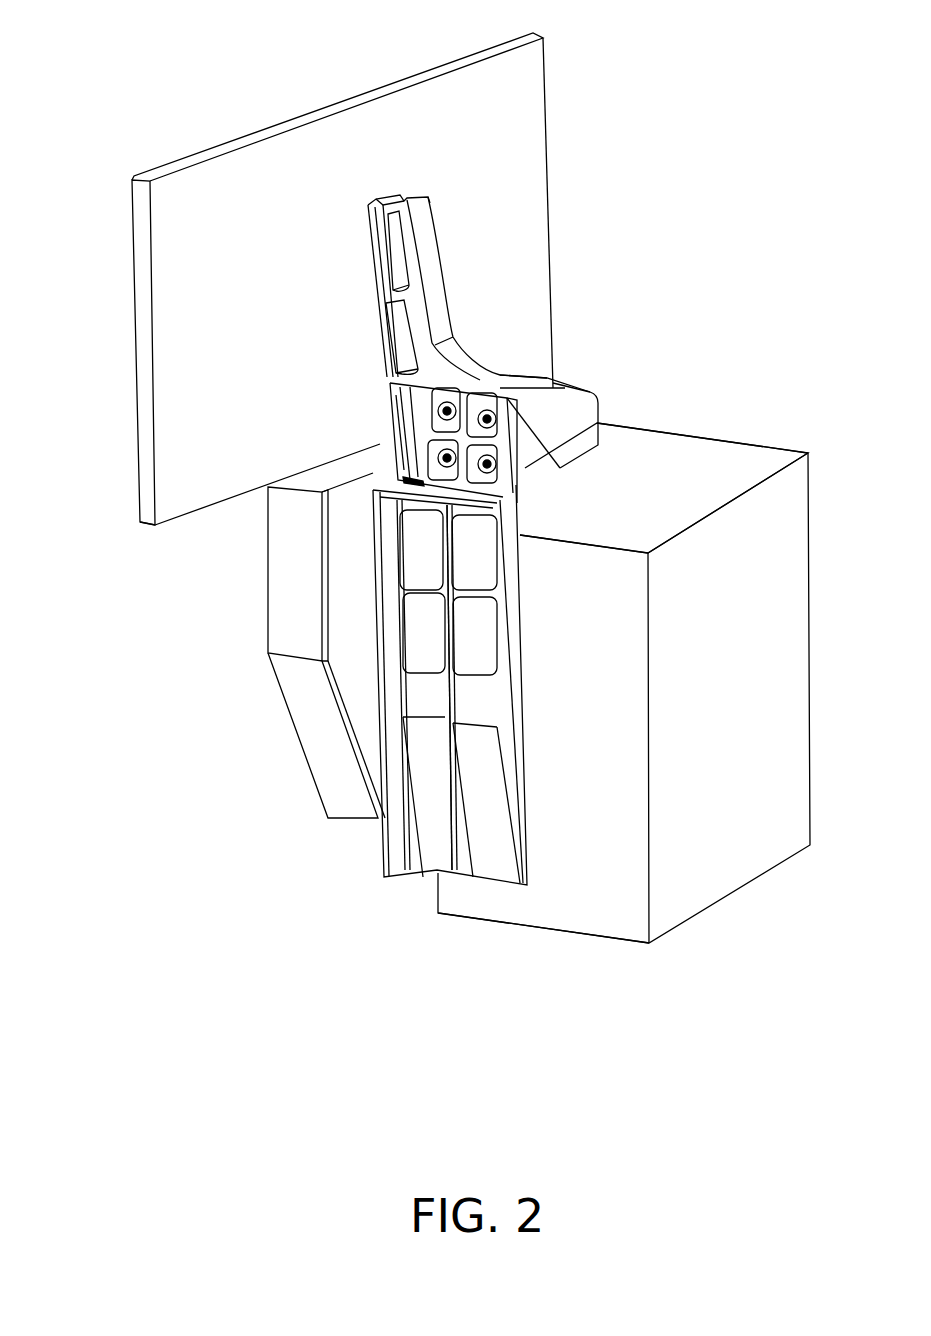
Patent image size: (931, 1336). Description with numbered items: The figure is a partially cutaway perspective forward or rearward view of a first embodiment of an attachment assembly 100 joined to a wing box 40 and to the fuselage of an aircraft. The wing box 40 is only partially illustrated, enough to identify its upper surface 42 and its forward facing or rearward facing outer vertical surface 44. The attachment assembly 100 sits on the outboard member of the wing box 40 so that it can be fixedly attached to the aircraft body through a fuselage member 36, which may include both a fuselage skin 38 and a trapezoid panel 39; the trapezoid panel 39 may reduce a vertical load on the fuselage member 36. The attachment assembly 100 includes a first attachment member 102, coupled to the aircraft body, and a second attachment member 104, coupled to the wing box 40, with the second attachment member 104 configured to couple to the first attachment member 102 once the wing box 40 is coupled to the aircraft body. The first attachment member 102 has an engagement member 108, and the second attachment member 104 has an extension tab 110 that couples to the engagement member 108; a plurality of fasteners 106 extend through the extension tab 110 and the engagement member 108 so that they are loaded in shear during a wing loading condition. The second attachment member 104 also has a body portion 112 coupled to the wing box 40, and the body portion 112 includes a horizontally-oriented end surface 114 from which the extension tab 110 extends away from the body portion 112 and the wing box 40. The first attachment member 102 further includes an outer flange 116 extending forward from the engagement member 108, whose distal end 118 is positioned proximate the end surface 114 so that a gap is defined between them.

The fuselage member 36 is at (222, 534).
The fuselage skin 38 is at (145, 388).
The trapezoid panel 39 is at (268, 630).
The wing box 40 is at (620, 614).
The upper surface 42 is at (722, 465).
The outer vertical surface 44 is at (580, 912).
The attachment assembly 100 is at (560, 362).
The first attachment member 102 is at (357, 284).
The second attachment member 104 is at (540, 715).
The fasteners 106 is at (432, 412).
The engagement member 108 is at (550, 428).
The extension tab 110 is at (508, 462).
The body portion 112 is at (482, 637).
The end surface 114 is at (497, 500).
The outer flange 116 is at (388, 430).
The distal end 118 is at (410, 470).